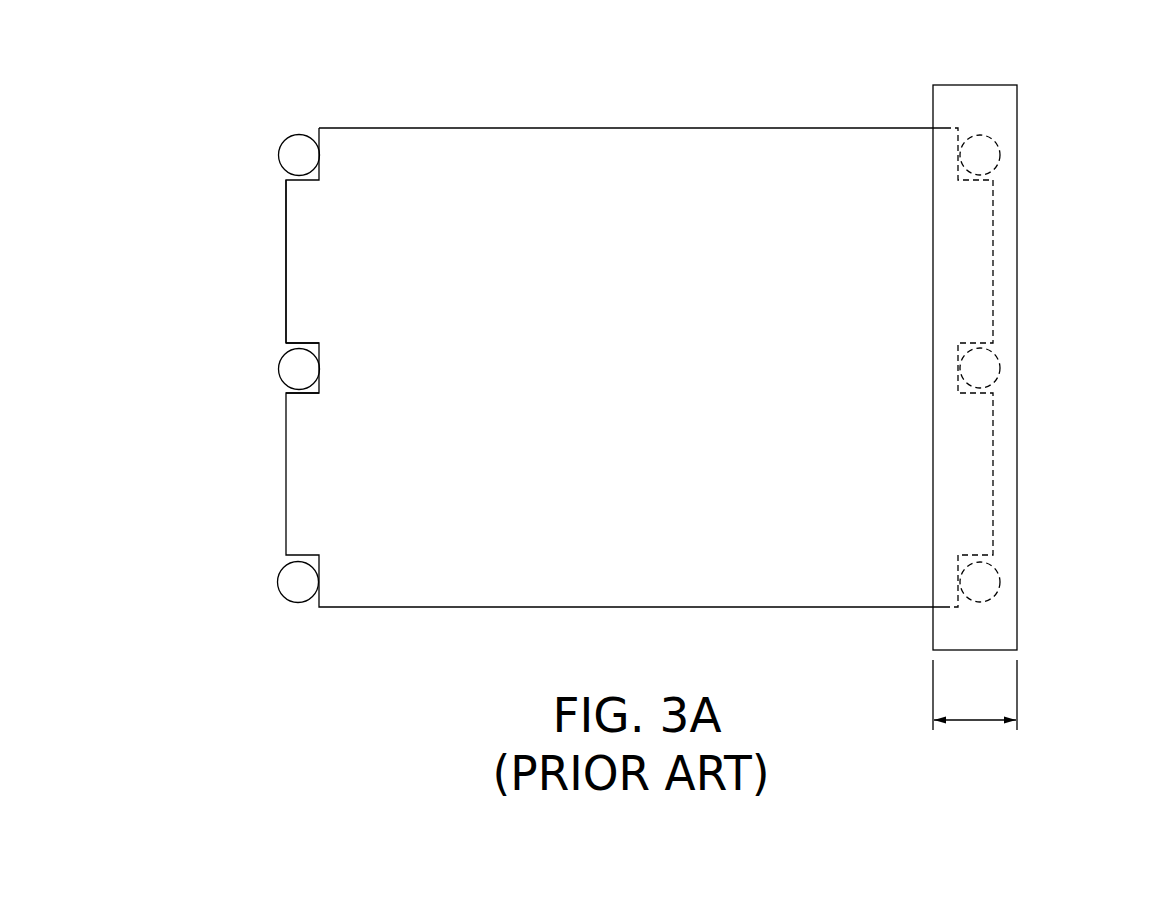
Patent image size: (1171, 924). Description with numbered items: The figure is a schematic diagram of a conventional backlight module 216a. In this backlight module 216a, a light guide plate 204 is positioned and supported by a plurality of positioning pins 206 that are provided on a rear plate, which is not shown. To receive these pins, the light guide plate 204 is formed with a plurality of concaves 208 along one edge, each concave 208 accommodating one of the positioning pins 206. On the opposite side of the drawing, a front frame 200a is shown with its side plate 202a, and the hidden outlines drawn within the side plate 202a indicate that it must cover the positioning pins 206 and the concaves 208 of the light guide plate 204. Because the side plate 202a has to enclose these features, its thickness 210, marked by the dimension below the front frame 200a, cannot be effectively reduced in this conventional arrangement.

The front frame 200a is at (1028, 281).
The side plate 202a is at (965, 98).
The light guide plate 204 is at (510, 148).
The positioning pins 206 is at (302, 150).
The concaves 208 is at (300, 343).
The thickness 210 is at (975, 695).
The backlight module 216a is at (215, 172).